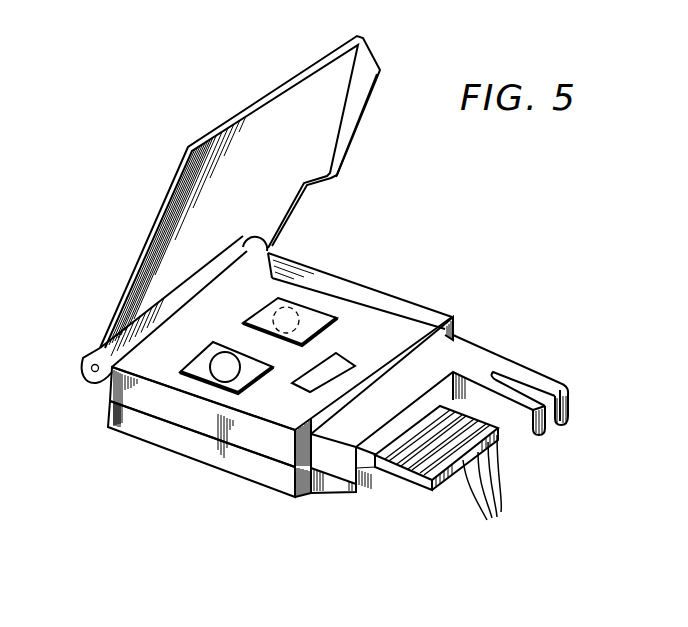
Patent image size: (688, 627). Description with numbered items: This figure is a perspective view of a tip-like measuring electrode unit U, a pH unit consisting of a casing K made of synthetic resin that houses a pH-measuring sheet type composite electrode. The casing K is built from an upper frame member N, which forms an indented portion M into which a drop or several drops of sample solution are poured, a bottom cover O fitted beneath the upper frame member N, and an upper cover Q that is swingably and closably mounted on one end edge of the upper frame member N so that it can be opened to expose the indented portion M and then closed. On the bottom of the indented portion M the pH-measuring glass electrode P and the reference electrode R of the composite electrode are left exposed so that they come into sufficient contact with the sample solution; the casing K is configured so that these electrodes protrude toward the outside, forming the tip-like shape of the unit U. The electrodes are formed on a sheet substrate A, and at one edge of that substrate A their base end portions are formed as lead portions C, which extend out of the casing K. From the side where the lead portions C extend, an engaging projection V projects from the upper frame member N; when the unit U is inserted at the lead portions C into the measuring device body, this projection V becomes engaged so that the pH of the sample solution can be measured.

The upper cover Q is at (170, 252).
The reference electrode R is at (312, 319).
The indented portion M is at (369, 335).
The tip-like measuring electrode unit U is at (437, 268).
The casing K is at (462, 369).
The engaging projection V is at (538, 379).
The pH-measuring glass electrode P is at (210, 375).
The upper frame member N is at (208, 428).
The bottom cover O is at (256, 475).
The substrate A is at (410, 477).
The lead portion C is at (486, 484).